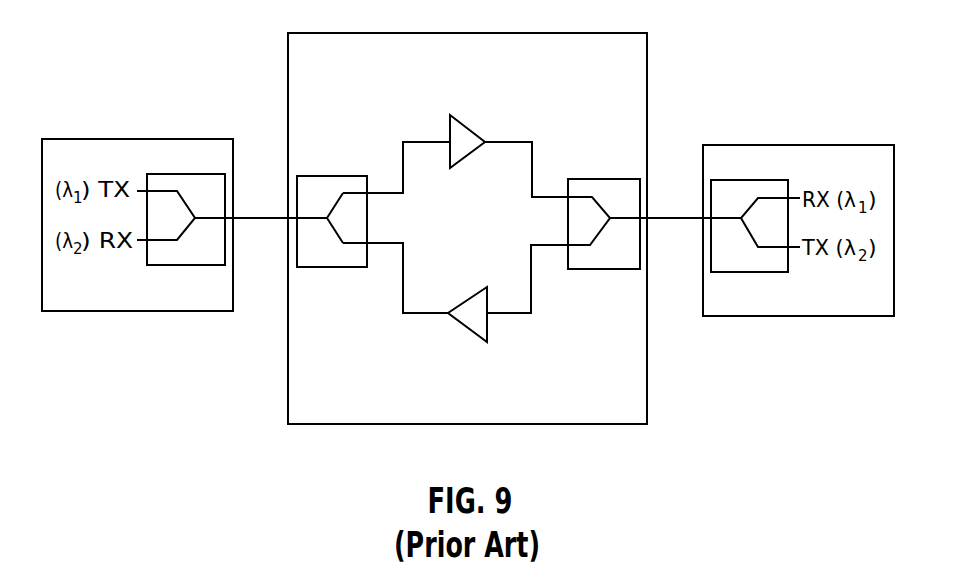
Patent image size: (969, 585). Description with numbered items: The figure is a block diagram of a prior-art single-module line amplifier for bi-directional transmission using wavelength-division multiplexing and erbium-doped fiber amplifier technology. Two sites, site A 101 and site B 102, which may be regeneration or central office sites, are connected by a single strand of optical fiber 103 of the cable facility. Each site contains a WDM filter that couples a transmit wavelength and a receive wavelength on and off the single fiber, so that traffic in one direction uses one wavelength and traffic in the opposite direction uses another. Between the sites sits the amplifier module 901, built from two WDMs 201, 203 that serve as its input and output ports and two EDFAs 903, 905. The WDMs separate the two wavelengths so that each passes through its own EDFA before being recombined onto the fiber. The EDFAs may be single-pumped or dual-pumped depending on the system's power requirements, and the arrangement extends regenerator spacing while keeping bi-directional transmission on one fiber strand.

The site A 101 is at (137, 208).
The site B 102 is at (798, 214).
The strand of optical fiber 103 is at (247, 218).
The WDM filter 201 is at (548, 209).
The WDM filter 203 is at (388, 209).
The amplifier module 901 is at (305, 425).
The EDFA 903 is at (465, 122).
The EDFA 905 is at (470, 332).